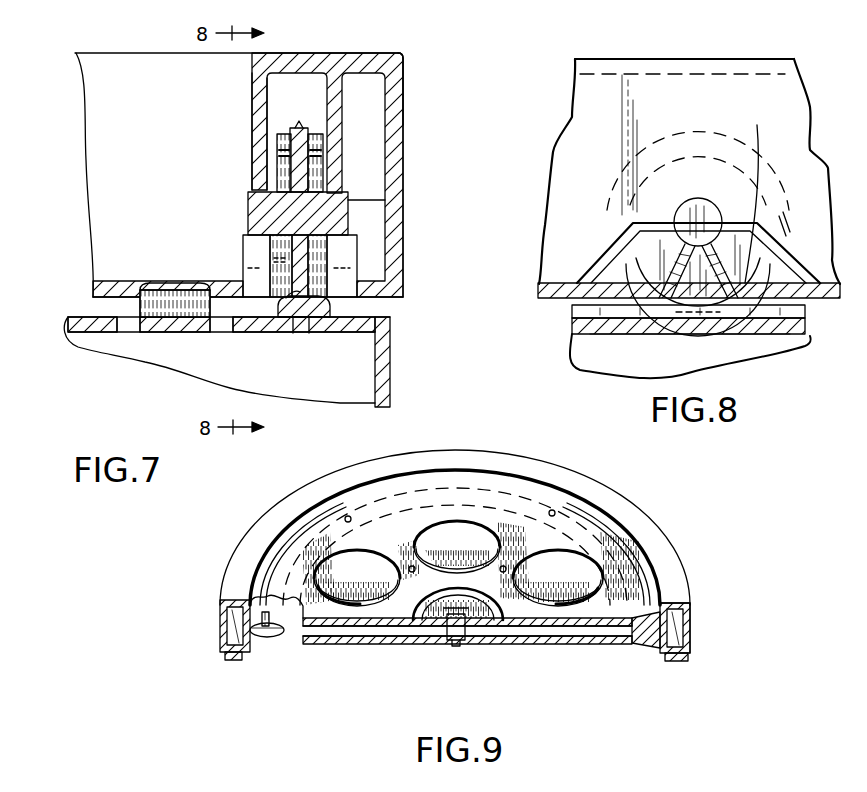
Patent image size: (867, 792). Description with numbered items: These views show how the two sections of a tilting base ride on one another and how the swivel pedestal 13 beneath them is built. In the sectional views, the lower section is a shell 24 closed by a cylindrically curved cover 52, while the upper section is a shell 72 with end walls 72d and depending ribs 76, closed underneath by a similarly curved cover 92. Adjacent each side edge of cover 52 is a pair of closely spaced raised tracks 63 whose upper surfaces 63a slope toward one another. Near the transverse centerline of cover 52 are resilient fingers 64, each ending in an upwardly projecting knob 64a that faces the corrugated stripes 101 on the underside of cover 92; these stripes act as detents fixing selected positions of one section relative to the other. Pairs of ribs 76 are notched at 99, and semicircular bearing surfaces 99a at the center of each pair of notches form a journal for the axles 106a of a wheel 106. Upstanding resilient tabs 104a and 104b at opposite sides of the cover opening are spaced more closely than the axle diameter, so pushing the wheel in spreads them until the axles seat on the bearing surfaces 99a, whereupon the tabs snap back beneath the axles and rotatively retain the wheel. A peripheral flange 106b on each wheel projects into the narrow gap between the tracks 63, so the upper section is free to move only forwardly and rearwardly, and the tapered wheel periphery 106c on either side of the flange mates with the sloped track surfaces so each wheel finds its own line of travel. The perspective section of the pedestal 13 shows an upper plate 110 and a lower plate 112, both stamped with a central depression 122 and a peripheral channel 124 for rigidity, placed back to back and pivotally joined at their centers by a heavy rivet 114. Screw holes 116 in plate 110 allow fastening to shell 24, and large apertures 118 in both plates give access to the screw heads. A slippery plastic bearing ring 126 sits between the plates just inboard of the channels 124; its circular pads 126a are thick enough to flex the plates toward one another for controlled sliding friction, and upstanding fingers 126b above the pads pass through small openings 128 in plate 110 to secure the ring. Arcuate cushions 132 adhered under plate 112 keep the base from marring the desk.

In FIG. 9, the swivel pedestal 13 is at (184, 592).
In FIG. 7, the shell 24 is at (107, 353).
In FIG. 8, the shell 24 is at (782, 350).
In FIG. 7, the cover 52 is at (70, 322).
In FIG. 8, the cover 52 is at (594, 337).
In FIG. 7, the tracks 63 is at (258, 334).
In FIG. 8, the tracks 63 is at (578, 313).
In FIG. 7, the upper surfaces 63a is at (333, 300).
In FIG. 7, the resilient fingers 64 is at (180, 325).
In FIG. 7, the knob 64a is at (161, 288).
In FIG. 7, the shell 72 is at (157, 42).
In FIG. 8, the shell 72 is at (711, 65).
In FIG. 7, the end walls 72d is at (403, 122).
In FIG. 7, the ribs 76 is at (253, 140).
In FIG. 8, the ribs 76 is at (580, 131).
In FIG. 8, the cover 92 is at (550, 294).
In FIG. 8, the notches 99 is at (782, 220).
In FIG. 7, the bearing surfaces 99a is at (250, 205).
In FIG. 8, the bearing surfaces 99a is at (700, 200).
In FIG. 7, the corrugated stripes 101 is at (172, 292).
In FIG. 7, the resilient tab 104a is at (247, 245).
In FIG. 8, the resilient tab 104a is at (600, 224).
In FIG. 7, the resilient tab 104b is at (347, 258).
In FIG. 7, the wheel 106 is at (300, 126).
In FIG. 8, the wheel 106 is at (622, 272).
In FIG. 7, the axles 106a is at (350, 198).
In FIG. 8, the axles 106a is at (652, 218).
In FIG. 7, the peripheral flange 106b is at (297, 334).
In FIG. 8, the peripheral flange 106b is at (734, 318).
In FIG. 7, the spring clip tab 106c is at (277, 135).
In FIG. 9, the upper plate 110 is at (650, 572).
In FIG. 9, the lower plate 112 is at (590, 647).
In FIG. 9, the rivet 114 is at (453, 642).
In FIG. 9, the screw holes 116 is at (457, 547).
In FIG. 9, the apertures 118 is at (376, 560).
In FIG. 9, the central depression 122 is at (483, 642).
In FIG. 9, the peripheral channel 124 is at (686, 624).
In FIG. 9, the bearing ring 126 is at (270, 600).
In FIG. 9, the circular pads 126a is at (371, 500).
In FIG. 9, the upstanding fingers 126b is at (335, 503).
In FIG. 9, the small openings 128 is at (348, 515).
In FIG. 9, the arcuate cushions 132 is at (236, 662).